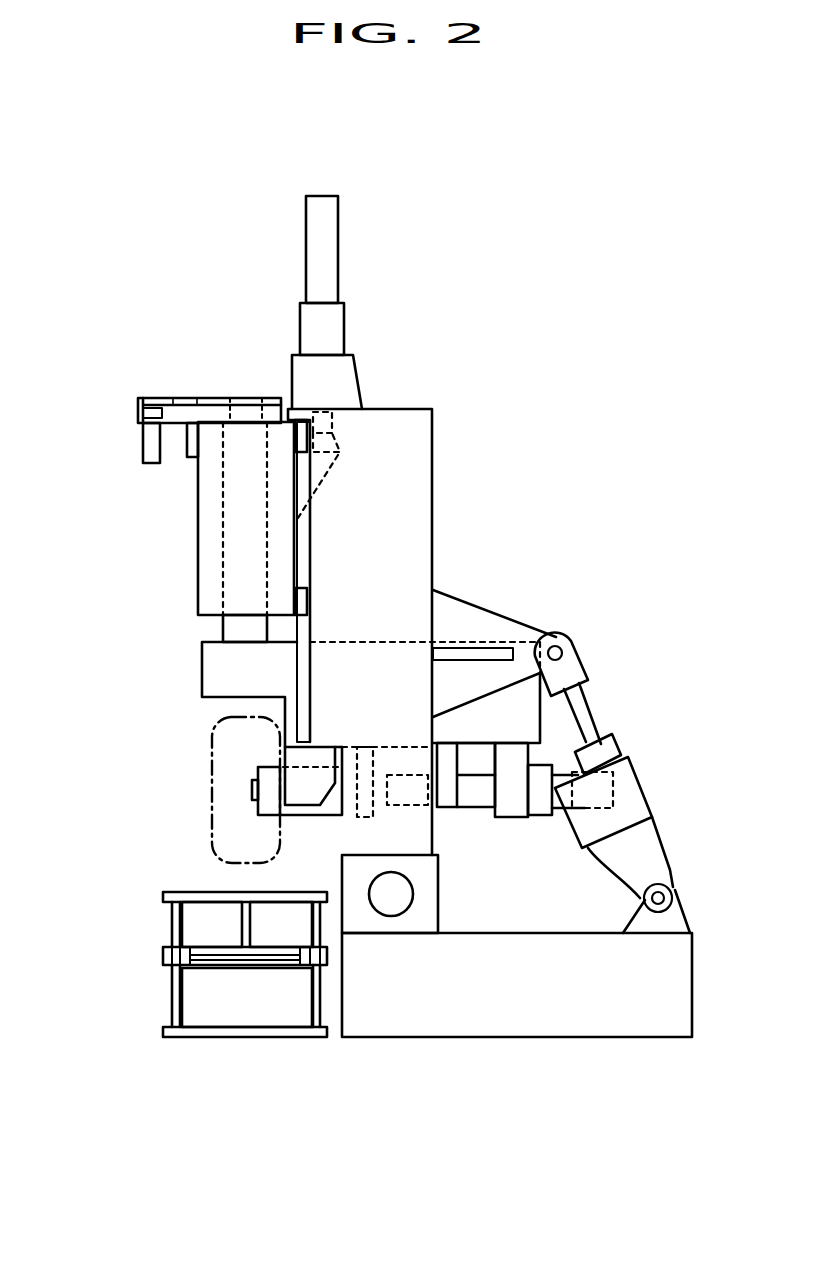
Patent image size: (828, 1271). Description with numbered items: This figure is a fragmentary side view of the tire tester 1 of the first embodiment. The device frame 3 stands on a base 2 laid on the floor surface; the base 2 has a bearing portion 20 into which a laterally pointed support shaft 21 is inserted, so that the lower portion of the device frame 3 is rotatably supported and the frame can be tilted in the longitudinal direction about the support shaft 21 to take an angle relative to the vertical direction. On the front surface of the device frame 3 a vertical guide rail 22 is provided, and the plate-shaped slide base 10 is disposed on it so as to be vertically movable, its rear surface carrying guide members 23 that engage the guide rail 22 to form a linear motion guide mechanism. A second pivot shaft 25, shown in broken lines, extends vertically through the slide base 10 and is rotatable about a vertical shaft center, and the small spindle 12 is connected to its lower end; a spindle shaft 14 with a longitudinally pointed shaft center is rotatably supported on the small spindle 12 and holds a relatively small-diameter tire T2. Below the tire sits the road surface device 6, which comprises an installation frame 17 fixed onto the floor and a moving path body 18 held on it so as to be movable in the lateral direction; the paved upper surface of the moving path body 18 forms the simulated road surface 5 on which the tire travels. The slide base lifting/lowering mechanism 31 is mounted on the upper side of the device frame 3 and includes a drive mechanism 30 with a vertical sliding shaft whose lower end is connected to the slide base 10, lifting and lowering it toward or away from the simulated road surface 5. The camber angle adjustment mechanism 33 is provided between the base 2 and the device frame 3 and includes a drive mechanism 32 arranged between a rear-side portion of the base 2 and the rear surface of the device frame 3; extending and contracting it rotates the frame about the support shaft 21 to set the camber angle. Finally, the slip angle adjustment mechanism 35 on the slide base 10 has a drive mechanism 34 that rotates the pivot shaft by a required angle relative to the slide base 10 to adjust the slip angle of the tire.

The tire tester 1 is at (536, 404).
The base 2 is at (537, 1037).
The device frame 3 is at (434, 527).
The simulated road surface 5 is at (200, 892).
The road surface device 6 is at (200, 936).
The slide base 10 is at (210, 532).
The small spindle 12 is at (268, 767).
The spindle shaft 14 is at (252, 790).
The installation frame 17 is at (172, 997).
The moving path body 18 is at (172, 925).
The bearing portion 20 is at (438, 893).
The support shaft 21 is at (391, 916).
The guide rail 22 is at (297, 673).
The guide member 23 is at (300, 455).
The second pivot shaft 25 is at (222, 553).
The drive mechanism 30 is at (339, 215).
The slide base lifting/lowering mechanism 31 is at (358, 330).
The drive mechanism 32 is at (645, 780).
The camber angle adjustment mechanism 33 is at (620, 733).
The drive mechanism 34 is at (143, 440).
The slip angle adjustment mechanism 35 is at (172, 390).
The tire T2 is at (210, 745).